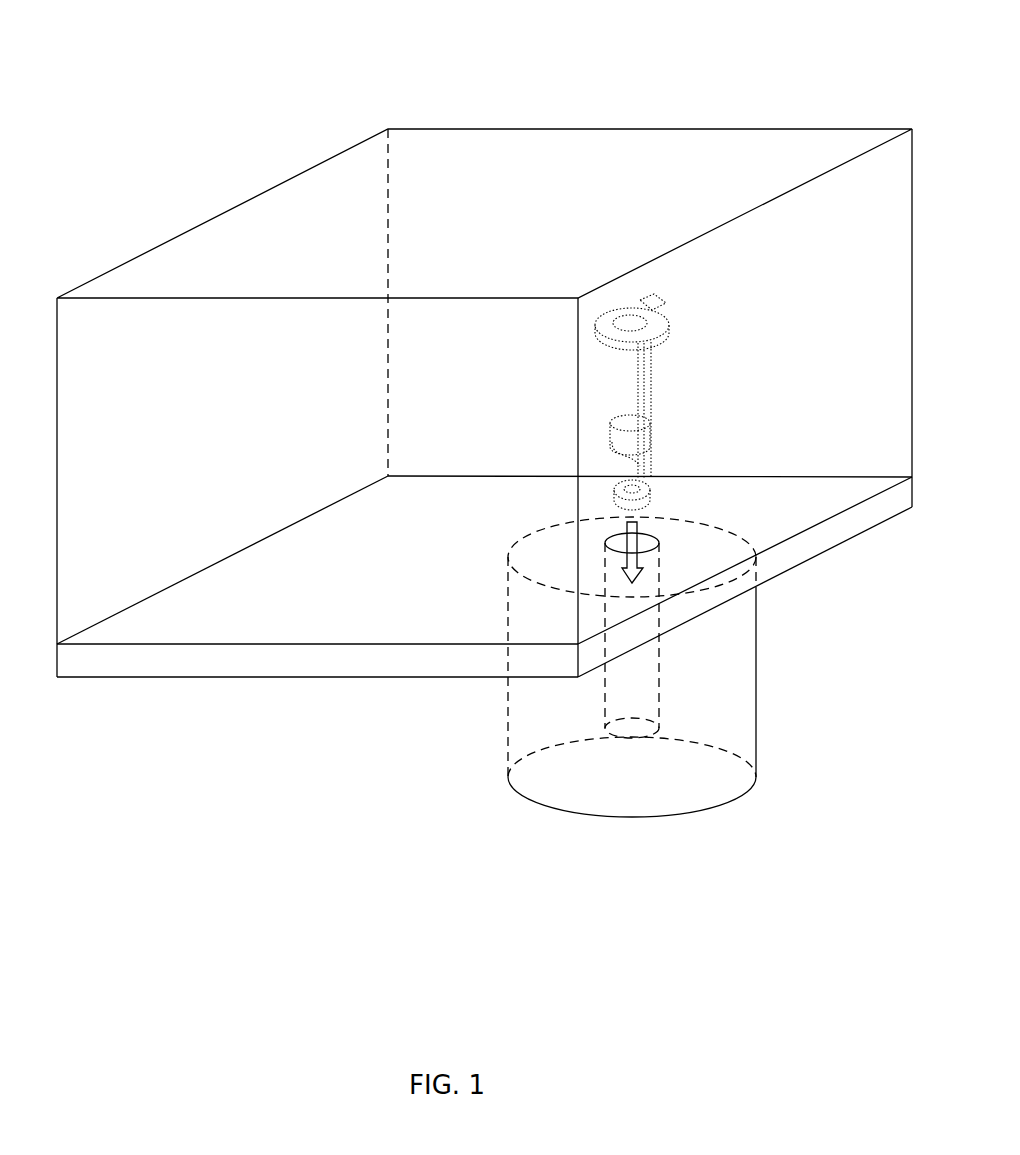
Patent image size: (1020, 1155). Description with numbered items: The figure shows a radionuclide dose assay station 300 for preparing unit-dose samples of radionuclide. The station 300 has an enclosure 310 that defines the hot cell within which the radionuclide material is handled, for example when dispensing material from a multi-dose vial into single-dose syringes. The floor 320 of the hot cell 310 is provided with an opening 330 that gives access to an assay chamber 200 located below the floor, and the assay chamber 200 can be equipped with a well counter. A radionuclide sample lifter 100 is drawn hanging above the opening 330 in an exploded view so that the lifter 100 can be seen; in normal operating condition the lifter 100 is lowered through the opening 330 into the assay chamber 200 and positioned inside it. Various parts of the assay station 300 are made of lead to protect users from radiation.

The radionuclide dose assay station 300 is at (503, 41).
The enclosure 310 is at (810, 153).
The floor 320 is at (262, 660).
The opening 330 is at (657, 538).
The assay chamber 200 is at (738, 715).
The radionuclide sample lifter 100 is at (684, 372).